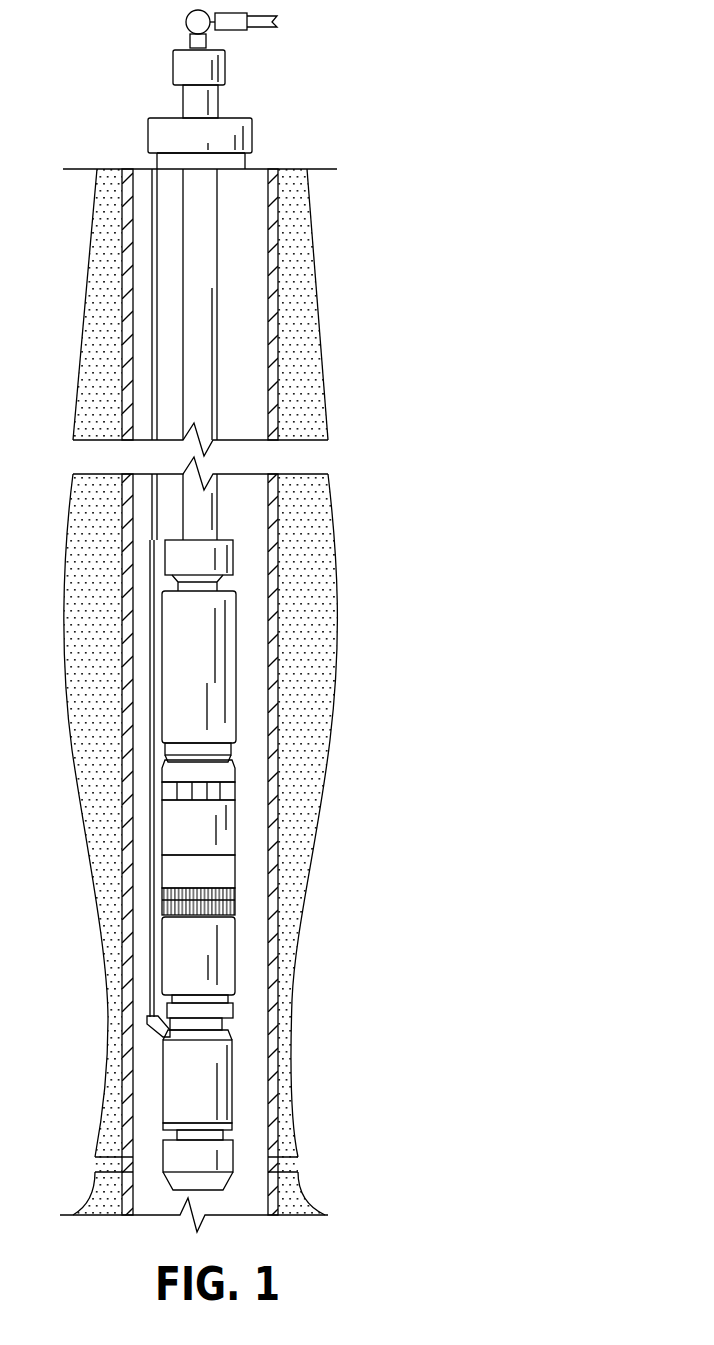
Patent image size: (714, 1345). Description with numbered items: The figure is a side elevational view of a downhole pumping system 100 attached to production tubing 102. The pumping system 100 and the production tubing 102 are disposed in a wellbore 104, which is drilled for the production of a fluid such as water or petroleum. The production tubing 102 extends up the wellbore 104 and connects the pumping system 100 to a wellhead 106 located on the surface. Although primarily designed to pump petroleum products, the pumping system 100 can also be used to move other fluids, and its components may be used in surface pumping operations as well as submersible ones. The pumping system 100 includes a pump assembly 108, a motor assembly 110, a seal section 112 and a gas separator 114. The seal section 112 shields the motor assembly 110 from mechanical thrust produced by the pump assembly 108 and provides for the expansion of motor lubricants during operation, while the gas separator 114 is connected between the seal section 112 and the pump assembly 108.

The pumping system 100 is at (282, 865).
The production tubing 102 is at (210, 213).
The wellbore 104 is at (272, 278).
The wellhead 106 is at (187, 67).
The pump assembly 108 is at (230, 710).
The motor assembly 110 is at (228, 1088).
The seal section 112 is at (237, 933).
The gas separator 114 is at (237, 838).